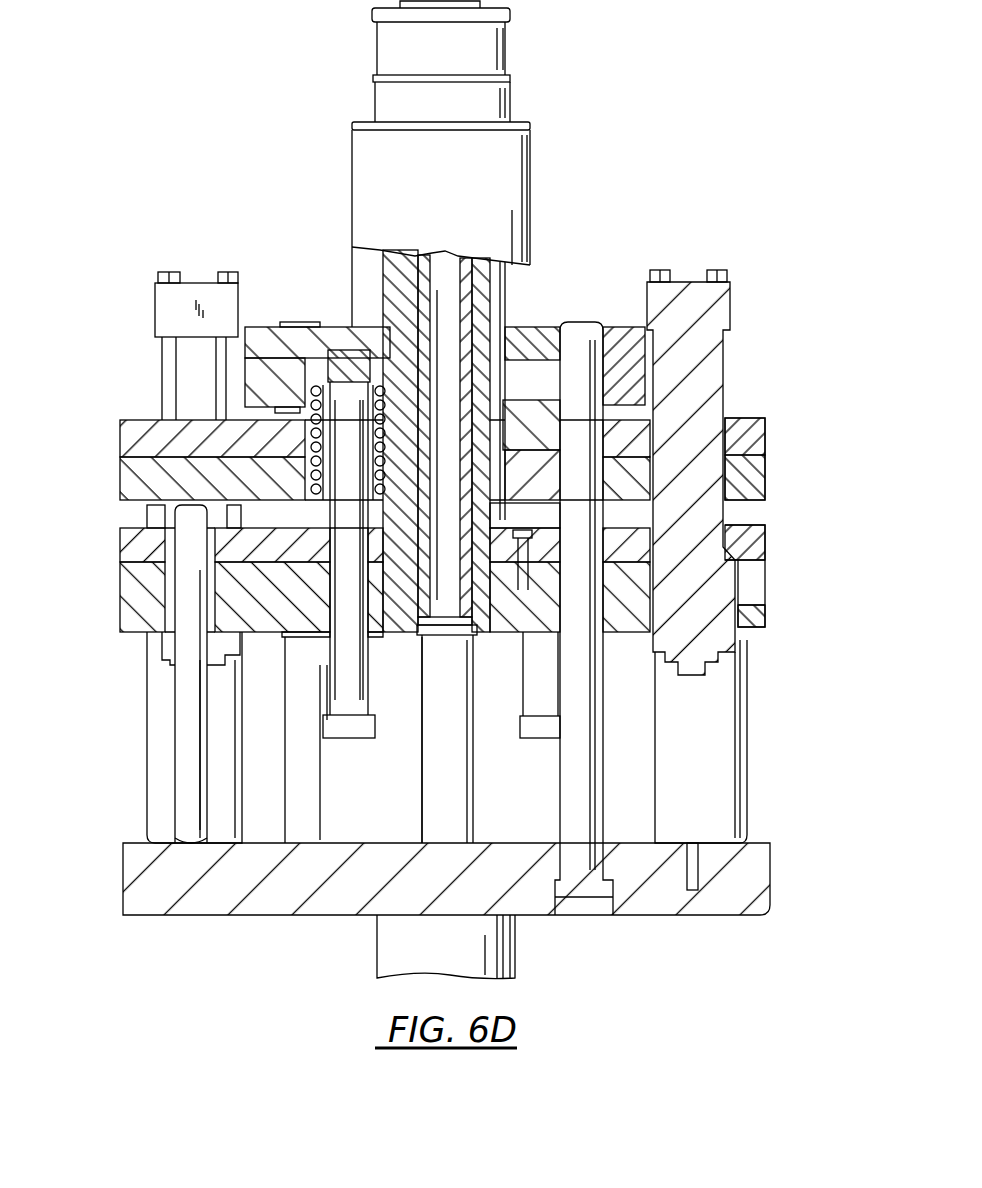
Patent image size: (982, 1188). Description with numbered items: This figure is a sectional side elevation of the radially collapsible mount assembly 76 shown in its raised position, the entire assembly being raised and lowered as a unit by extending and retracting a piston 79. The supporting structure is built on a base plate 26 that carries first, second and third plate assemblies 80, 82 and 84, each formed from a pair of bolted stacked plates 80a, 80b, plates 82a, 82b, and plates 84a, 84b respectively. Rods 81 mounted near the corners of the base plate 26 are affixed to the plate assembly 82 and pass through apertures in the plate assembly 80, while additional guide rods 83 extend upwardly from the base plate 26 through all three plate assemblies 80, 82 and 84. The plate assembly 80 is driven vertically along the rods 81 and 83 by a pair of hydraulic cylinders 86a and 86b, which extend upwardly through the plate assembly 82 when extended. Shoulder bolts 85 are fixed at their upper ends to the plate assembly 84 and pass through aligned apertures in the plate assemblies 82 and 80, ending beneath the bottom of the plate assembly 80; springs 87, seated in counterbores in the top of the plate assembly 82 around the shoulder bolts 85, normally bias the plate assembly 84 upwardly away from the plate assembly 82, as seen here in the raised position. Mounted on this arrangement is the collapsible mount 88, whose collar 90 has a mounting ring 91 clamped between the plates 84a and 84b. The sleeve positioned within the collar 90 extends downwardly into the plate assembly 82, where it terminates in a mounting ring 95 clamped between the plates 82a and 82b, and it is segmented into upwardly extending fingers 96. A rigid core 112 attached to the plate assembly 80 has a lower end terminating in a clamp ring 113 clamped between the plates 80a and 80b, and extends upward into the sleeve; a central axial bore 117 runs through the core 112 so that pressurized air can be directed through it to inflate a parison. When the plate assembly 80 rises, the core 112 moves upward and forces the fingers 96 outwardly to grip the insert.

The base plate 26 is at (770, 868).
The mount assembly 76 is at (110, 568).
The piston 79 is at (378, 942).
The first plate assembly 80 is at (778, 563).
The plate 80a is at (766, 532).
The plate 80b is at (766, 612).
The rods 81 is at (147, 790).
The second plate assembly 82 is at (778, 446).
The plate 82a is at (766, 428).
The plate 82b is at (766, 478).
The guide rods 83 is at (328, 814).
The third plate assembly 84 is at (236, 350).
The plate 84a is at (250, 325).
The plate 84b is at (262, 388).
The shoulder bolts 85 is at (355, 740).
The hydraulic cylinder 86a is at (730, 318).
The hydraulic cylinder 86b is at (155, 318).
The springs 87 is at (305, 466).
The collapsible mount 88 is at (566, 182).
The collar 90 is at (535, 140).
The mounting ring 91 is at (525, 400).
The mounting ring 95 is at (520, 430).
The fingers 96 is at (515, 85).
The core 112 is at (420, 287).
The clamp ring 113 is at (478, 636).
The central axial bore 117 is at (432, 278).